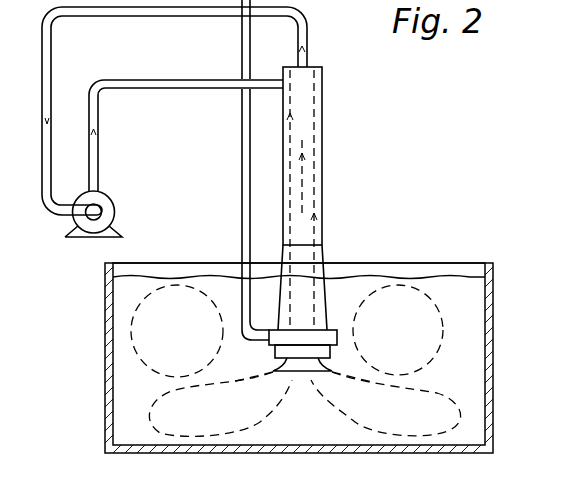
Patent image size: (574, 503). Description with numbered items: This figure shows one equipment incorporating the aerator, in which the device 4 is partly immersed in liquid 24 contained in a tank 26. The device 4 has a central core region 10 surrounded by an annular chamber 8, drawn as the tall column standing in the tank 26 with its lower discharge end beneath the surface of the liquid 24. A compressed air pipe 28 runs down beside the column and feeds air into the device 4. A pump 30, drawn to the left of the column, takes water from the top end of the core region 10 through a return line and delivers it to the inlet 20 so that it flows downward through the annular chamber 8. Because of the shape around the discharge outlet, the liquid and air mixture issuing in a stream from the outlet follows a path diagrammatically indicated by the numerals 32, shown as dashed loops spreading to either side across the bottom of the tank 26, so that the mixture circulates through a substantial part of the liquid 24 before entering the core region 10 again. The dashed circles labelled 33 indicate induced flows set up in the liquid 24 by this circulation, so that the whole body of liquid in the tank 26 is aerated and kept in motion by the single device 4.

The device 4 is at (348, 192).
The annular chamber 8 is at (318, 138).
The core region 10 is at (320, 219).
The inlet 20 is at (262, 82).
The liquid 24 is at (455, 285).
The tank 26 is at (103, 430).
The compressed air pipe 28 is at (242, 177).
The pump 30 is at (107, 200).
The path 32 is at (253, 422).
The induced flows 33 is at (182, 285).